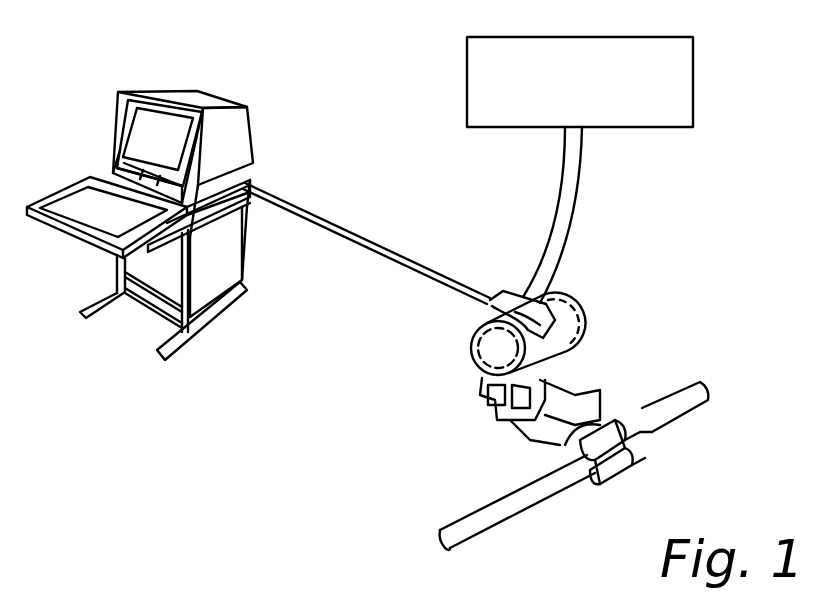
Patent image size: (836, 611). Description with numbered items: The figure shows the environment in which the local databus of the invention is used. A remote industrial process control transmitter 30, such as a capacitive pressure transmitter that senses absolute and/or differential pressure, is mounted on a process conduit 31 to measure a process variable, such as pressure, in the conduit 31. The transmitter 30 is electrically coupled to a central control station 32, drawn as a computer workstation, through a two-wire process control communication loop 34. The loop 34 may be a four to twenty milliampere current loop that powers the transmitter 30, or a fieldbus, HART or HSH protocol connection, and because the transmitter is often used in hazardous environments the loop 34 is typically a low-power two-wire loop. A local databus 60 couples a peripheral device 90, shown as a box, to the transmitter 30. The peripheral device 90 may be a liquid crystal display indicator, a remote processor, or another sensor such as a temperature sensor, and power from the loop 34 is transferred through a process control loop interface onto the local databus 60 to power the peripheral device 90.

The remote industrial process control transmitter 30 is at (482, 330).
The process conduit 31 is at (472, 508).
The central control station 32 is at (163, 90).
The two-wire process control communication loop 34 is at (384, 244).
The local databus 60 is at (560, 165).
The peripheral device 90 is at (620, 127).